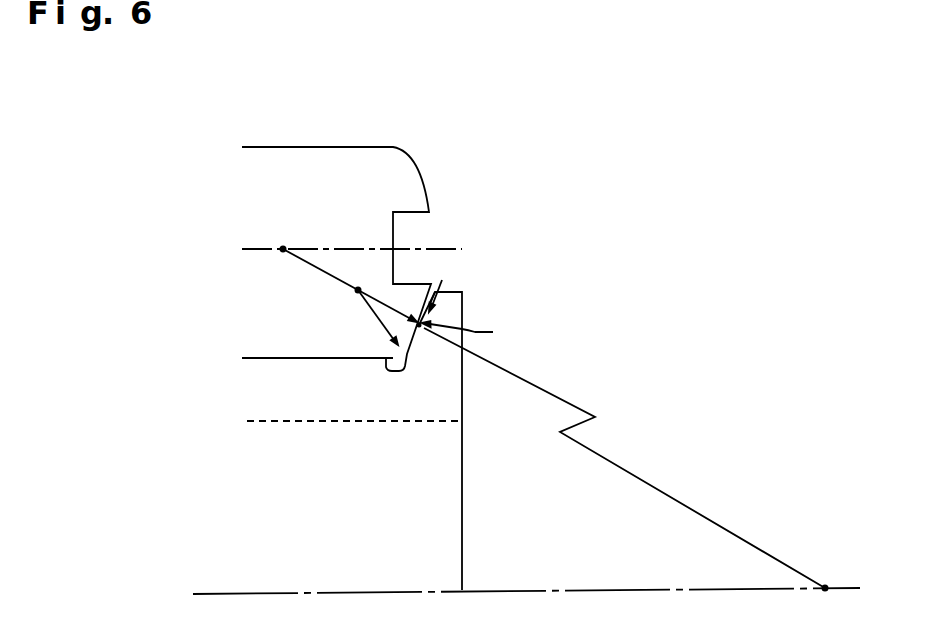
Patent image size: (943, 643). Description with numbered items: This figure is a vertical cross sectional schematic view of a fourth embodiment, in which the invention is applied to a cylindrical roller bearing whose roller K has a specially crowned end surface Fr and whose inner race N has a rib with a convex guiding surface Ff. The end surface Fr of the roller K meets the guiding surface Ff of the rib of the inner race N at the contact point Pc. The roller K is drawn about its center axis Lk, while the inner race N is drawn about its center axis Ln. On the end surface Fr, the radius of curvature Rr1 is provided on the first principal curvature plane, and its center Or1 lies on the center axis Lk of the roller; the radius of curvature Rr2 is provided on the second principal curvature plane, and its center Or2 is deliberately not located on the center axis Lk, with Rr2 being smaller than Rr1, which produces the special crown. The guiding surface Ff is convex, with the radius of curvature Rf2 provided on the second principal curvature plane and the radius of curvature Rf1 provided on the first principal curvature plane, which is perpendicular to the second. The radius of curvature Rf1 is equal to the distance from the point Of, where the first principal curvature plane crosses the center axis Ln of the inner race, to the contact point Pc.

The roller K is at (337, 159).
The inner race N is at (441, 493).
The center axis of inner race Ln is at (553, 590).
The center axis of the roller Lk is at (263, 251).
The center of the radius of curvature Rr1 Or1 is at (283, 234).
The radius of curvature of the roller end surface on the first principal curvature p Rr1 is at (350, 285).
The center of the radius of curvature Rr2 Or2 is at (336, 302).
The radius of curvature of the roller end surface on the second principal curvature Rr2 is at (368, 320).
The contact point Pc is at (418, 326).
The end surface of the roller Fr is at (428, 302).
The guiding surface of the rib of the inner race Ff is at (430, 296).
The radius of curvature of the guiding surface on the second principal curvature pla Rf2 is at (474, 333).
The radius of curvature of the guiding surface on the first principal curvature plan Rf1 is at (624, 458).
The point where the first principal curvature plane crosses the center axis of the i Of is at (825, 601).